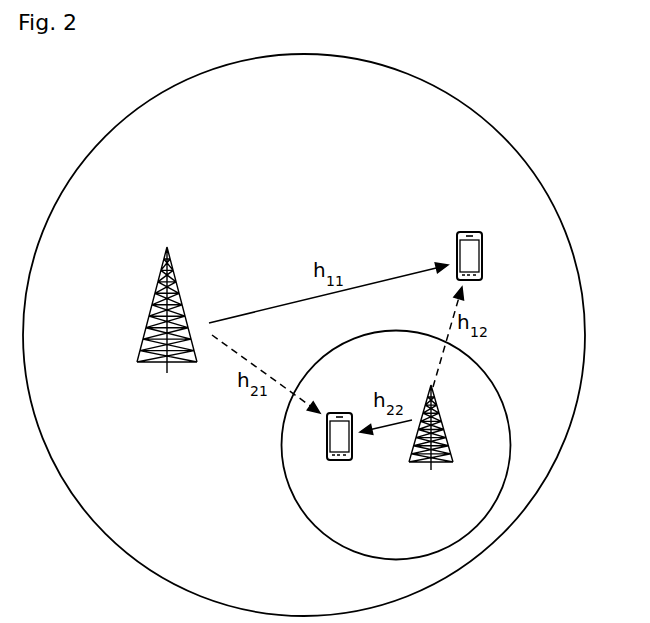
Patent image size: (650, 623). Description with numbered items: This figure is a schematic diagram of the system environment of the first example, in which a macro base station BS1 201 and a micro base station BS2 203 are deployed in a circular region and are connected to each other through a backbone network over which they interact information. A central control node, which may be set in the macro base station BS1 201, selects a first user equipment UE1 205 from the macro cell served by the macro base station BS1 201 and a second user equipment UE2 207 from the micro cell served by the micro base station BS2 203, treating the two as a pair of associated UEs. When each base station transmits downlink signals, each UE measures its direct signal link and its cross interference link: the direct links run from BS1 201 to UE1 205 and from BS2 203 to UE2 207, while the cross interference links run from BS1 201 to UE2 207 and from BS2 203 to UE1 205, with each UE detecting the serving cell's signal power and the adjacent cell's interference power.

The macro base station BS1 201 is at (156, 310).
The micro base station BS2 203 is at (443, 419).
The UE1 205 is at (470, 231).
The UE2 207 is at (340, 412).